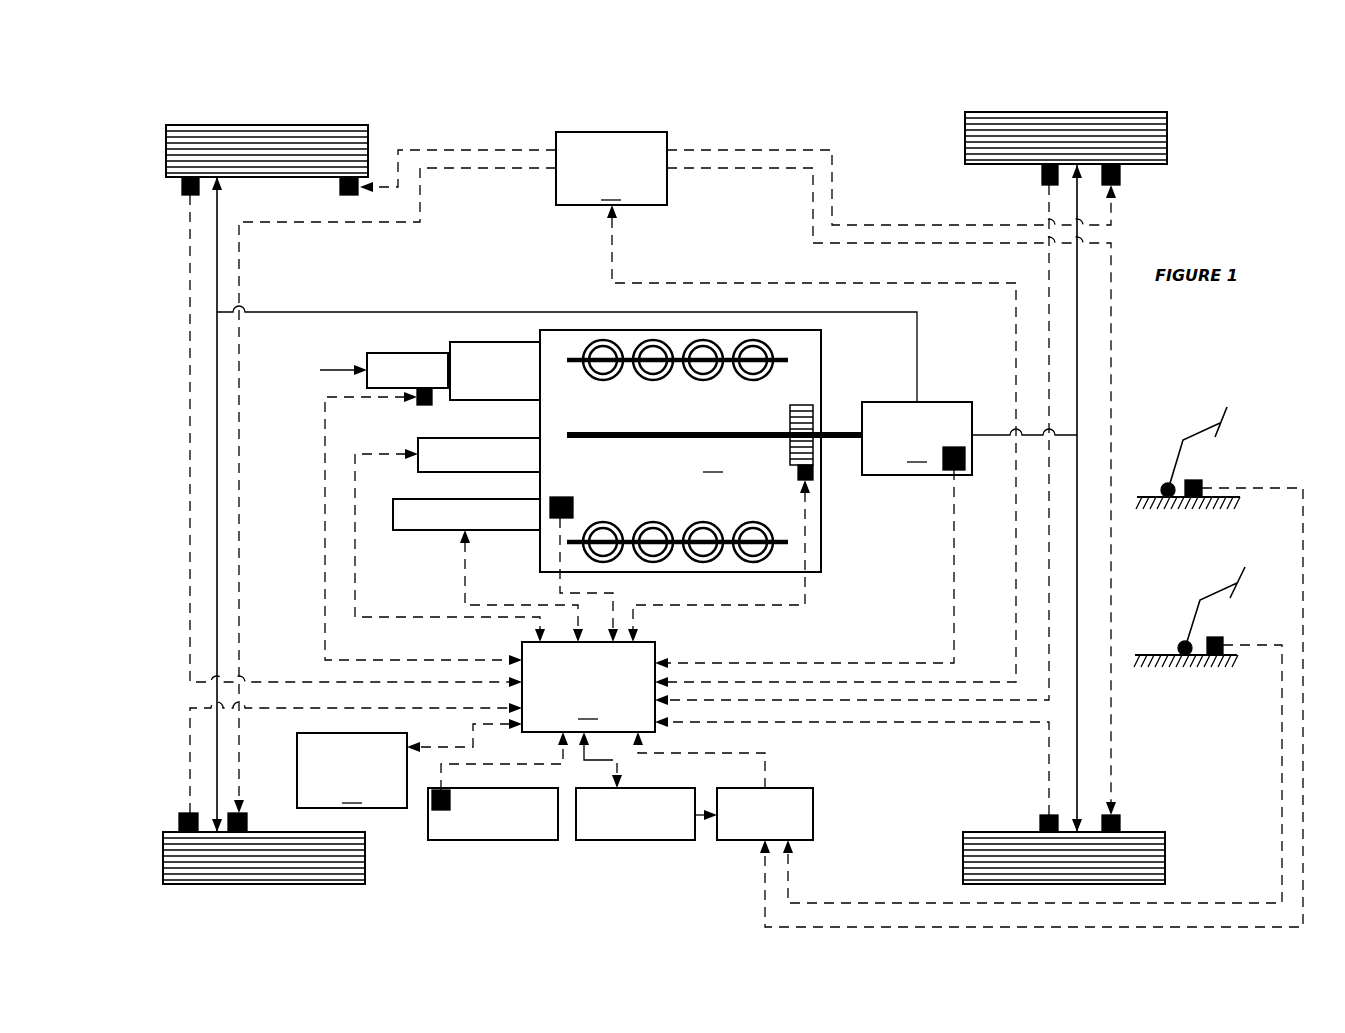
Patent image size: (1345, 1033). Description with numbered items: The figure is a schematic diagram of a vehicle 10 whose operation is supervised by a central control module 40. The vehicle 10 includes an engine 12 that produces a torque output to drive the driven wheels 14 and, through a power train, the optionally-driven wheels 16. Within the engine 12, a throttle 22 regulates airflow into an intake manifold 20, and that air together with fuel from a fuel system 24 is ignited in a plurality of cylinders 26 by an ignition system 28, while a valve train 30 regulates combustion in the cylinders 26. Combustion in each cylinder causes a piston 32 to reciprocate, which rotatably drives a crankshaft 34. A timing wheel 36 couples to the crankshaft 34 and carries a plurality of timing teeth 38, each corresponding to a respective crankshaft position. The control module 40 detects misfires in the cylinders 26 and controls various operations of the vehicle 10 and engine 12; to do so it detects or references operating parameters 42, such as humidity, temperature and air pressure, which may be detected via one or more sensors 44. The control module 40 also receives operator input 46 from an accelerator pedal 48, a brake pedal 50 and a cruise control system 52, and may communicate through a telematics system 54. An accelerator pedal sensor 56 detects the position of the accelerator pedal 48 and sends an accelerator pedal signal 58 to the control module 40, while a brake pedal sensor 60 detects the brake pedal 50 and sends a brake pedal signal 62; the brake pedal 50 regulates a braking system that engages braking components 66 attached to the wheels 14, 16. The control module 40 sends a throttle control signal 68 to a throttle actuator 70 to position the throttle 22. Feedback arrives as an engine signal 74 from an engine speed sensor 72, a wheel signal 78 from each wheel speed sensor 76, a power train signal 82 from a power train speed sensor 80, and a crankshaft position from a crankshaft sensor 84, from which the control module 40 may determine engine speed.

The vehicle 10 is at (1142, 311).
The engine 12 is at (670, 480).
The driven wheels 14 is at (292, 125).
The optionally-driven wheels 16 is at (1045, 112).
The intake manifold 20 is at (917, 438).
The throttle 22 is at (378, 353).
The fuel system 24 is at (440, 438).
The cylinders 26 is at (702, 380).
The ignition system 28 is at (440, 499).
The valve train 30 is at (458, 342).
The piston 32 is at (652, 374).
The crankshaft 34 is at (587, 438).
The timing wheel 36 is at (790, 466).
The timing teeth 38 is at (805, 418).
The control module 40 is at (588, 687).
The operating parameters 42 is at (490, 840).
The sensors 44 is at (432, 806).
The operator input 46 is at (730, 840).
The accelerator pedal 48 is at (1178, 463).
The brake pedal 50 is at (1192, 624).
The cruise control system 52 is at (630, 840).
The telematics system 54 is at (409, 763).
The accelerator pedal sensor 56 is at (1200, 478).
The accelerator pedal signal 58 is at (1303, 497).
The brake pedal sensor 60 is at (1222, 636).
The brake pedal signal 62 is at (1282, 775).
The braking components 66 is at (338, 186).
The throttle control signal 68 is at (330, 378).
The throttle actuator 70 is at (425, 408).
The engine speed sensor 72 is at (563, 480).
The engine signal 74 is at (560, 560).
The wheel speed sensor 76 is at (182, 188).
The wheel signal 78 is at (190, 285).
The power train speed sensor 80 is at (965, 460).
The power train signal 82 is at (956, 555).
The crankshaft sensor 84 is at (825, 486).